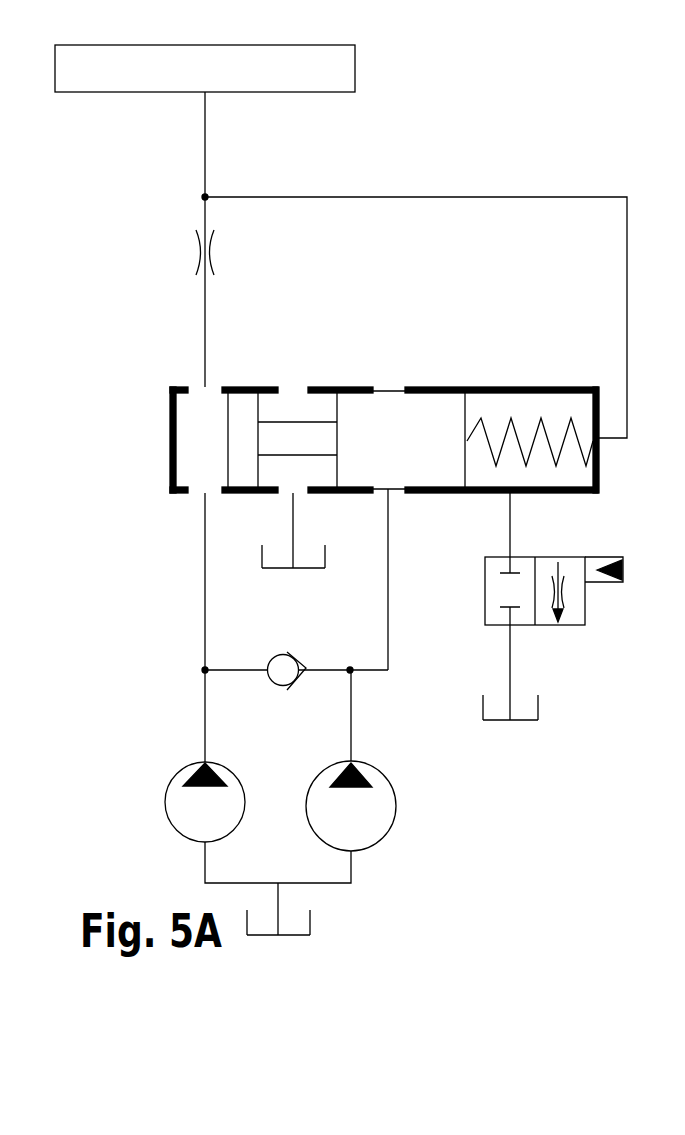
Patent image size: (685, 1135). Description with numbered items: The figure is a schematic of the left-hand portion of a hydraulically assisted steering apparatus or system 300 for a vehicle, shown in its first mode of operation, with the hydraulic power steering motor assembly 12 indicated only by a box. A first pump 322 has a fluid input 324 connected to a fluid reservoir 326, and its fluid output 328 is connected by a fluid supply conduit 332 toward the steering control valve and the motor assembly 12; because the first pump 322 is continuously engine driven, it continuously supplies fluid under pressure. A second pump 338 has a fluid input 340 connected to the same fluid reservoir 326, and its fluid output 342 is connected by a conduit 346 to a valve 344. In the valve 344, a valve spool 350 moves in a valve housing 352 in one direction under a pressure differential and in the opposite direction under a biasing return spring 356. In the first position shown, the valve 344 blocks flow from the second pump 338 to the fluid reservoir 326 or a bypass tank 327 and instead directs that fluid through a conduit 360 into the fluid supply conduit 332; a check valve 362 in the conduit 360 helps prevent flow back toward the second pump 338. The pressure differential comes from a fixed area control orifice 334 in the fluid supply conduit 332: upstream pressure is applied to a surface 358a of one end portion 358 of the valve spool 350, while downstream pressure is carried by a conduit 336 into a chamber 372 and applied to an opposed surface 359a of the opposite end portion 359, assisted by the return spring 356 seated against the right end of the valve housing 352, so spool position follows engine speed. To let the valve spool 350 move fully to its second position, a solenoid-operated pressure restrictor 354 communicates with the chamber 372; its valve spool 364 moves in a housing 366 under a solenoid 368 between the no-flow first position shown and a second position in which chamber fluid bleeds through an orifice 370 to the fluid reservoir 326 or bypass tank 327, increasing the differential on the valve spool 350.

The hydraulic power steering motor assembly 12 is at (357, 74).
The hydraulically assisted steering apparatus or system 300 is at (528, 146).
The fluid supply conduit 332 is at (205, 147).
The fixed area control orifice 334 is at (212, 252).
The conduit 336 is at (407, 197).
The valve 344 is at (353, 399).
The valve spool 350 is at (382, 418).
The valve housing 352 is at (277, 387).
The biasing return spring 356 is at (512, 417).
The chamber 372 is at (565, 410).
The surface 358a is at (227, 440).
The end portion 358 is at (242, 495).
The opposite end portion 359 is at (418, 475).
The opposed surface 359a is at (465, 472).
The bypass tank 327 is at (325, 555).
The conduit 346 is at (388, 640).
The check valve 362 is at (270, 655).
The conduit 360 is at (322, 677).
The fluid output 328 is at (205, 762).
The fluid output 342 is at (351, 762).
The first pump 322 is at (185, 812).
The second pump 338 is at (397, 812).
The fluid input 324 is at (212, 843).
The fluid input 340 is at (355, 850).
The fluid reservoir 326 is at (310, 920).
The solenoid-operated pressure restrictor 354 is at (523, 579).
The housing 366 is at (487, 570).
The valve spool 364 is at (487, 608).
The solenoid 368 is at (610, 582).
The orifice 370 is at (565, 590).